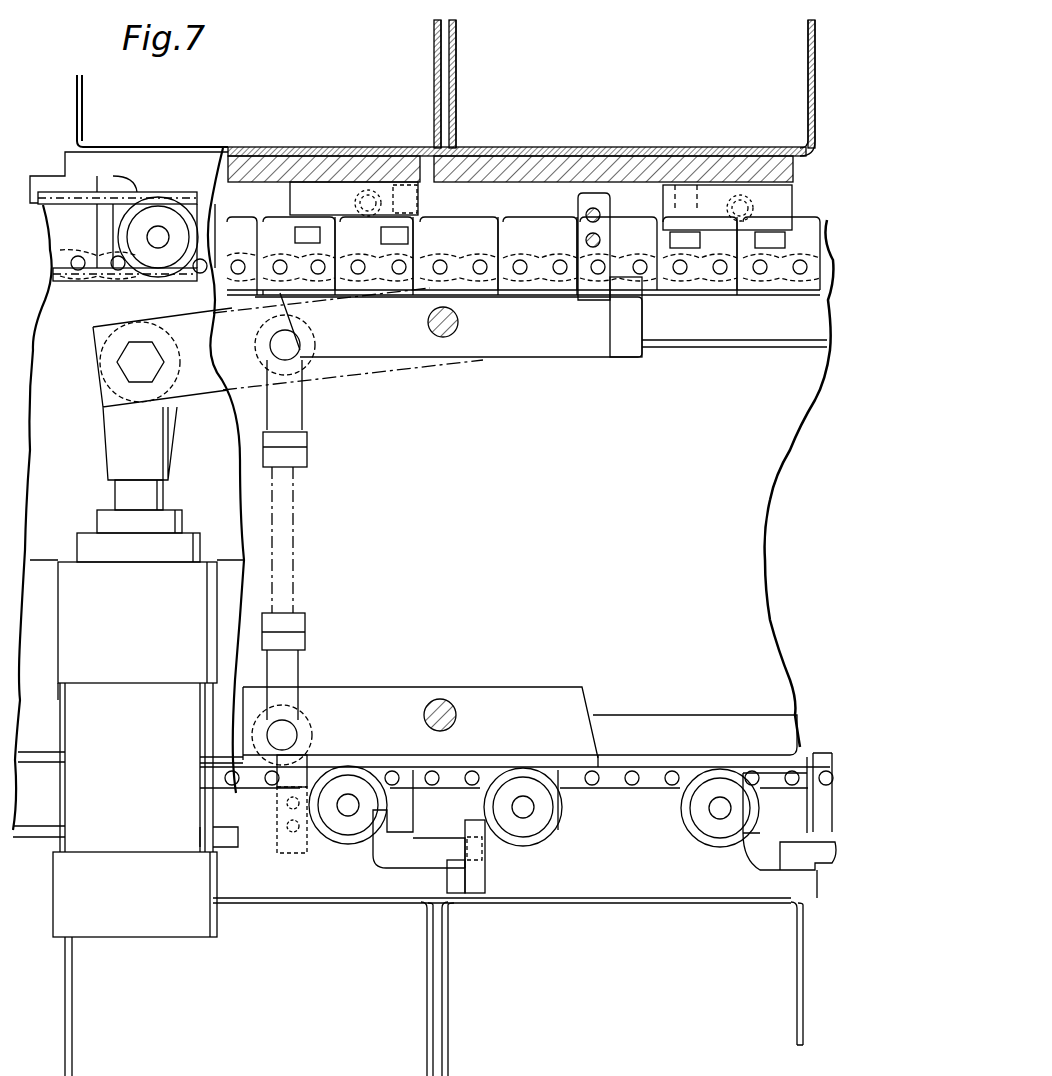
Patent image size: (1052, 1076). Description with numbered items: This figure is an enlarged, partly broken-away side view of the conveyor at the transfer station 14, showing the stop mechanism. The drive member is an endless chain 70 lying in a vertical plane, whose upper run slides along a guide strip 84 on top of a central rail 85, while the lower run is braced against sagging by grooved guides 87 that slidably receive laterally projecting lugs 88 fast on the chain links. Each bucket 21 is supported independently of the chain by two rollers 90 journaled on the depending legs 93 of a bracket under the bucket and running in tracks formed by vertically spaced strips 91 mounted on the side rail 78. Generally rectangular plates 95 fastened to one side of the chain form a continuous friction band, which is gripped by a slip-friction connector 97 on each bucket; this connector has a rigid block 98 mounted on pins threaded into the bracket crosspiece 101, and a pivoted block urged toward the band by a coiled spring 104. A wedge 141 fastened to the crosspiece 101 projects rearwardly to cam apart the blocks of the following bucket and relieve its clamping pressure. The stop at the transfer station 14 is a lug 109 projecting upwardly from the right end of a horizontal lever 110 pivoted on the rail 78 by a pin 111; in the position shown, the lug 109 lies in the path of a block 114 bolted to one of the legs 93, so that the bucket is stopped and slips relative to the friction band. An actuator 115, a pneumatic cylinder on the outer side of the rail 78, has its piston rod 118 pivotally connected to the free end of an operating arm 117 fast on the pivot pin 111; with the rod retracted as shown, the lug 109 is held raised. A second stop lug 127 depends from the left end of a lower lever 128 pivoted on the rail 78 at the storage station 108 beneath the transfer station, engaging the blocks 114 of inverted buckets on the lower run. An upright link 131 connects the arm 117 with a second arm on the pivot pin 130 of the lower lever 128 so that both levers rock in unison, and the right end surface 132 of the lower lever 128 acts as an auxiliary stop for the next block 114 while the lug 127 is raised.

The transfer station 14 is at (366, 96).
The bucket 21 is at (441, 80).
The endless chain 70 is at (541, 286).
The side rail 78 is at (52, 423).
The guide strip 84 is at (762, 342).
The central rail 85 is at (768, 500).
The grooved guides 87 is at (724, 722).
The lugs 88 is at (750, 293).
The rollers 90 is at (180, 232).
The strips 91 is at (182, 192).
The depending legs 93 is at (661, 782).
The plates 95 is at (547, 226).
The slip-friction connector 97 is at (361, 174).
The block 98 is at (792, 207).
The crosspiece 101 is at (340, 158).
The coiled spring 104 is at (356, 203).
The storage station 108 is at (599, 960).
The stop lug 109 is at (640, 293).
The lever 110 is at (590, 350).
The pin 111 is at (428, 322).
The block 114 is at (598, 268).
The actuator 115 is at (72, 715).
The operating arm 117 is at (226, 388).
The piston rod 118 is at (152, 497).
The stop lug 127 is at (254, 762).
The lever 128 is at (355, 688).
The pivot pin 130 is at (428, 726).
The upright link 131 is at (298, 566).
The right end surface 132 is at (592, 737).
The wedge 141 is at (400, 188).